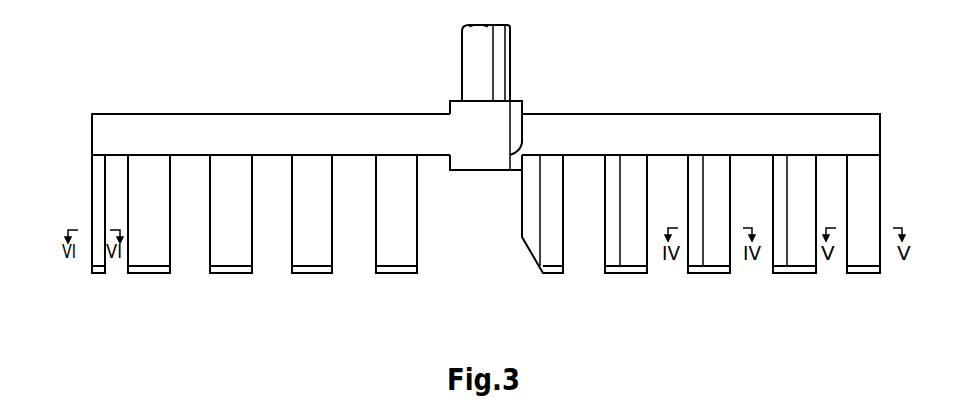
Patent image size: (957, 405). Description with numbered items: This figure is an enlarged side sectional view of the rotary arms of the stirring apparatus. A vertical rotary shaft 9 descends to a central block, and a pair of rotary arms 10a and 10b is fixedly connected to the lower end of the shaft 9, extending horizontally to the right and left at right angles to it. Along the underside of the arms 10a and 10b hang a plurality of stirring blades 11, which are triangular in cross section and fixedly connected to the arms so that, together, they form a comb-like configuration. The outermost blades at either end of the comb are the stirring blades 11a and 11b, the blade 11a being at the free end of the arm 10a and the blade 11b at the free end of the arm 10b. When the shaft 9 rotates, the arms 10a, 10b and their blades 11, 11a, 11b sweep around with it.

The rotary shaft 9 is at (505, 58).
The rotary arm 10a is at (740, 117).
The rotary arm 10b is at (278, 116).
The stirring blade 11 is at (150, 264).
The stirring blade 11a is at (862, 264).
The stirring blade 11b is at (100, 264).